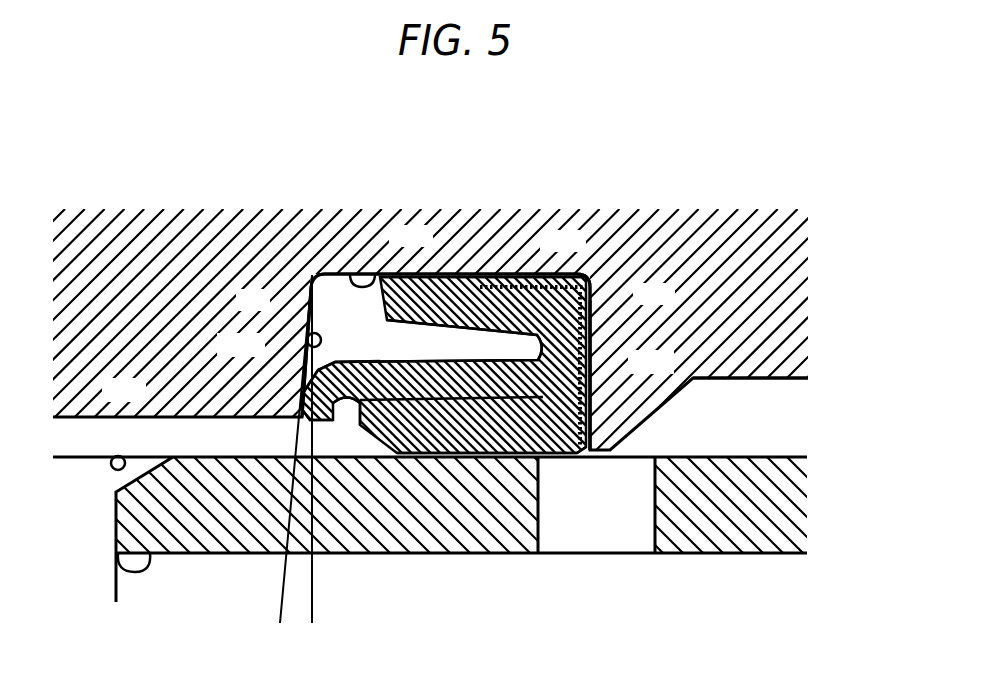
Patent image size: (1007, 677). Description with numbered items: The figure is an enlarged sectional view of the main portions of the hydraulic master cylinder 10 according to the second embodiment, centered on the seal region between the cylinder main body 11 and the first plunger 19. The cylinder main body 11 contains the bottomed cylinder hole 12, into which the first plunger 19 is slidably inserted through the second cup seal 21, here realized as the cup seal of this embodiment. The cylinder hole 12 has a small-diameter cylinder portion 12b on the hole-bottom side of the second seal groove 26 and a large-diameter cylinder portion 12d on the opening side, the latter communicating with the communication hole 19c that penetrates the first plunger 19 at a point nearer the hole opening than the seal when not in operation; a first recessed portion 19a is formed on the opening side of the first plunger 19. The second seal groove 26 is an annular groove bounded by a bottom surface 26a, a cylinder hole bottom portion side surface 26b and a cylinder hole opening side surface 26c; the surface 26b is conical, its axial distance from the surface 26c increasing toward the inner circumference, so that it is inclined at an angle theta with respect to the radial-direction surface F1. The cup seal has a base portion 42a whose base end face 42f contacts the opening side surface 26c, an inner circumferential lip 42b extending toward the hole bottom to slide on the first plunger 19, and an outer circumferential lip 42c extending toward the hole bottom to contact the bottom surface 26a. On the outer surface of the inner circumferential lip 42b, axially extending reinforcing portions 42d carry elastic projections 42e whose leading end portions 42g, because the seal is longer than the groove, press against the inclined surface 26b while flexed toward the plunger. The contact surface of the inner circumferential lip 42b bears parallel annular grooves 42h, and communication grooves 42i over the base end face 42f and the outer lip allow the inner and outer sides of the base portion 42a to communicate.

The hydraulic master cylinder 10 is at (650, 180).
The cylinder main body 11 is at (160, 206).
The cylinder hole 12 is at (84, 466).
The small-diameter cylinder portion 12b is at (112, 457).
The large-diameter cylinder portion 12d is at (792, 380).
The first plunger 19 is at (793, 500).
The first recessed portion 19a is at (116, 557).
The communication hole 19c is at (612, 540).
The second cup seal 21 is at (505, 268).
The second seal groove 26 is at (310, 307).
The bottom surface 26a is at (373, 282).
The cylinder hole bottom portion side surface 26b is at (307, 340).
The cylinder hole opening side surface 26c is at (592, 374).
The base portion 42a is at (574, 287).
The inner circumferential lip 42b is at (415, 457).
The outer circumferential lip 42c is at (410, 271).
The reinforcing portion 42d is at (438, 341).
The elastic projection 42e is at (337, 283).
The base end face 42f is at (588, 455).
The leading end portion 42g is at (305, 405).
The annular groove 42h is at (480, 458).
The communication groove 42i is at (593, 300).
The radial-direction surface F1 is at (314, 577).